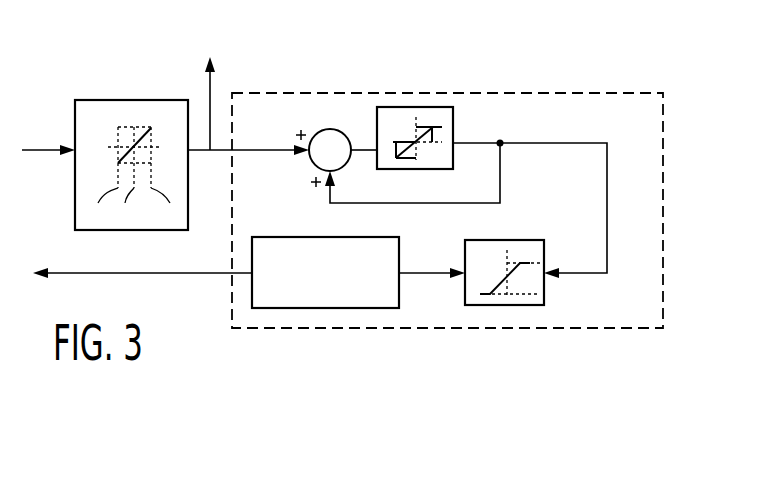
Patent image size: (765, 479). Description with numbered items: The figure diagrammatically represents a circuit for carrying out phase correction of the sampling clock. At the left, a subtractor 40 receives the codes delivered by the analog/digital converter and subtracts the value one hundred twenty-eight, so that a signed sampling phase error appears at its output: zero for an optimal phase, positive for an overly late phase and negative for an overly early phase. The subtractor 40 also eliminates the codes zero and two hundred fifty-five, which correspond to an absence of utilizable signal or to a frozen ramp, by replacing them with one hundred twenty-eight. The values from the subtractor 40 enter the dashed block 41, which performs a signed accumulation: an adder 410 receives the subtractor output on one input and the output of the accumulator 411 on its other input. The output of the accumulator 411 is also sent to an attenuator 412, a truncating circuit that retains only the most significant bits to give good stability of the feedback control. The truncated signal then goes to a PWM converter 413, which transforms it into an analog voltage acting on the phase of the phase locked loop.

The subtractor 40 is at (112, 100).
The control unit 41 is at (663, 203).
The adder 410 is at (336, 130).
The accumulator 411 is at (453, 115).
The attenuator 412 is at (518, 305).
The PWM converter 413 is at (338, 308).